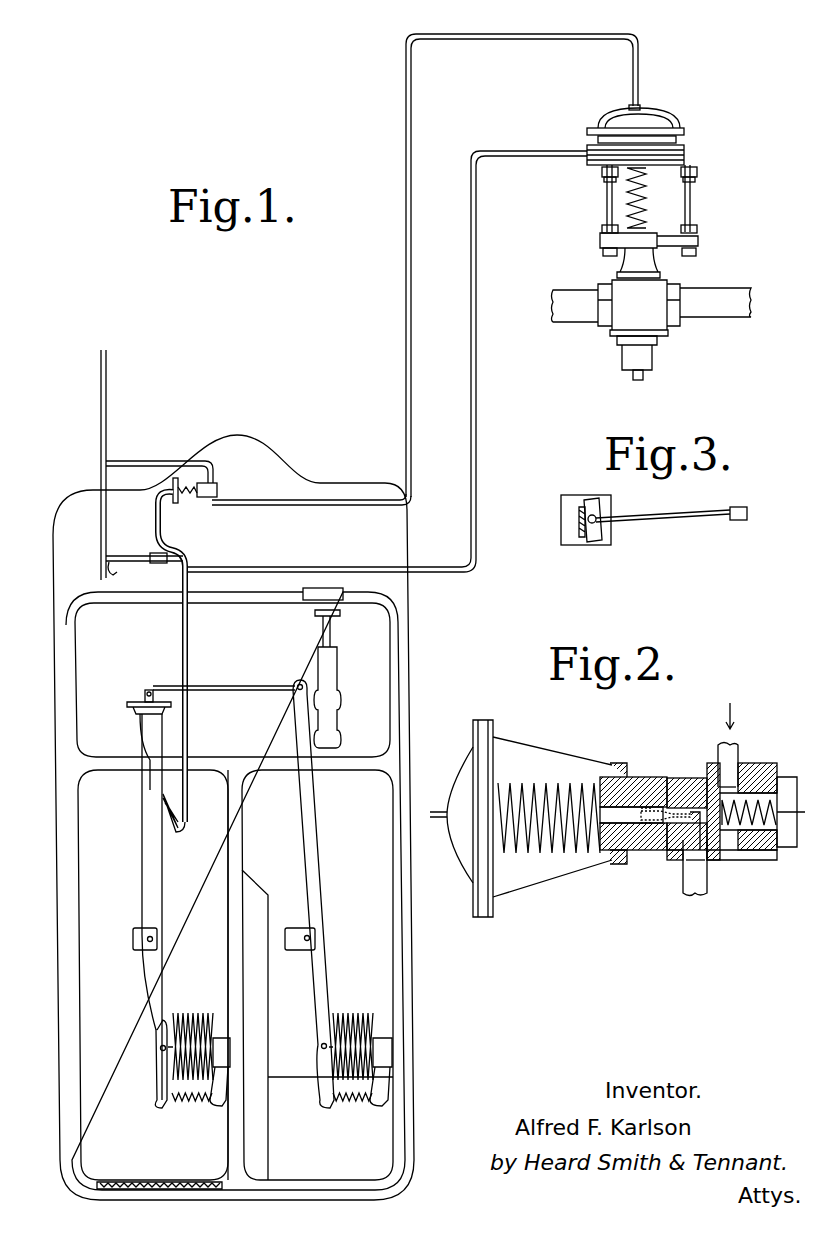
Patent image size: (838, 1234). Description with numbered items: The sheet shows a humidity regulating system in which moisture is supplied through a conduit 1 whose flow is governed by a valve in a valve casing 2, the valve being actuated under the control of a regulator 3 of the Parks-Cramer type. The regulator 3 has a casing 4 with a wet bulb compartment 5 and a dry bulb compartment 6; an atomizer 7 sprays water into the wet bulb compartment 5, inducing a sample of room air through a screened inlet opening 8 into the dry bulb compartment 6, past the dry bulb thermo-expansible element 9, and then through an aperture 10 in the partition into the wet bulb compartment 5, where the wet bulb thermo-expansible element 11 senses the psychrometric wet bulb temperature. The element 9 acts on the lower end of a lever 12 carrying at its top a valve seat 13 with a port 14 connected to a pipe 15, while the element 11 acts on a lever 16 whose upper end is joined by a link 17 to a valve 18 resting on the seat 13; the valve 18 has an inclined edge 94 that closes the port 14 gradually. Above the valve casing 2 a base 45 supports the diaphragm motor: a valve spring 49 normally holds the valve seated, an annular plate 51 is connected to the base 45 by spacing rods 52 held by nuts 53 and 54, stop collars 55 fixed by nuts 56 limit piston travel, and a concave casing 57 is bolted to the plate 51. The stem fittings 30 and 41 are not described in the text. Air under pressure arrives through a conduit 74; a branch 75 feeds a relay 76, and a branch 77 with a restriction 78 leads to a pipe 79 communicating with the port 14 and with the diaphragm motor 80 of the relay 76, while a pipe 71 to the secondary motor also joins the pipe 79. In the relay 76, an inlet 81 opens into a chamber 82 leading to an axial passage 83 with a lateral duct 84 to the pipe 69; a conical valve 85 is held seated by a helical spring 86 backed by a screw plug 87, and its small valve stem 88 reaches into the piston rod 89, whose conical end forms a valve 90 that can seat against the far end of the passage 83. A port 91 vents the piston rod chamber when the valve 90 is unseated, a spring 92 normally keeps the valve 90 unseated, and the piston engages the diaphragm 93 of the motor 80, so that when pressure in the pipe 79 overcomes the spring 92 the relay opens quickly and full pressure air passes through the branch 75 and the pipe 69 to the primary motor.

In FIG. 1, the conduit 1 is at (739, 290).
In FIG. 1, the valve casing 2 is at (652, 292).
In FIG. 1, the regulator 3 is at (380, 670).
In FIG. 1, the casing 4 is at (398, 748).
In FIG. 1, the wet bulb compartment 5 is at (393, 915).
In FIG. 1, the dry bulb compartment 6 is at (95, 987).
In FIG. 1, the atomizer 7 is at (336, 716).
In FIG. 1, the screened inlet opening 8 is at (130, 1183).
In FIG. 1, the dry bulb thermo-expansible element 9 is at (189, 1022).
In FIG. 1, the aperture 10 is at (230, 852).
In FIG. 1, the wet bulb thermo-expansible element 11 is at (349, 1020).
In FIG. 1, the lever 12 is at (164, 970).
In FIG. 1, the valve seat 13 is at (126, 703).
In FIG. 3, the valve seat 13 is at (611, 506).
In FIG. 1, the port 14 is at (140, 712).
In FIG. 3, the port 14 is at (580, 514).
In FIG. 1, the pipe 15 is at (188, 740).
In FIG. 1, the lever 16 is at (323, 965).
In FIG. 3, the lever 16 is at (748, 520).
In FIG. 1, the link 17 is at (229, 681).
In FIG. 3, the link 17 is at (676, 521).
In FIG. 1, the valve 18 is at (144, 690).
In FIG. 3, the valve 18 is at (594, 541).
In FIG. 1, the valve stem nut 30 is at (655, 366).
In FIG. 1, the valve stem end 41 is at (630, 375).
In FIG. 1, the base 45 is at (662, 233).
In FIG. 1, the valve spring 49 is at (636, 203).
In FIG. 1, the plate 51 is at (697, 133).
In FIG. 1, the spacing rods 52 is at (606, 203).
In FIG. 1, the nut 53 is at (698, 228).
In FIG. 1, the nut 54 is at (698, 250).
In FIG. 1, the stop collars 55 is at (698, 170).
In FIG. 1, the nuts 56 is at (697, 180).
In FIG. 1, the casing 57 is at (660, 114).
In FIG. 1, the pipe 69 is at (639, 86).
In FIG. 2, the pipe 69 is at (700, 893).
In FIG. 1, the pipe 71 is at (479, 411).
In FIG. 1, the conduit 74 is at (106, 412).
In FIG. 1, the branch 75 is at (143, 461).
In FIG. 2, the branch 75 is at (742, 757).
In FIG. 1, the relay 76 is at (218, 490).
In FIG. 2, the relay 76 is at (733, 851).
In FIG. 1, the branch 77 is at (125, 578).
In FIG. 1, the restriction 78 is at (153, 556).
In FIG. 1, the pipe 79 is at (187, 639).
In FIG. 1, the diaphragm motor 80 is at (170, 500).
In FIG. 2, the diaphragm motor 80 is at (468, 880).
In FIG. 2, the inlet 81 is at (736, 778).
In FIG. 2, the chamber 82 is at (745, 806).
In FIG. 2, the axial passage 83 is at (672, 870).
In FIG. 2, the duct 84 is at (688, 880).
In FIG. 2, the conical valve 85 is at (712, 775).
In FIG. 2, the helical spring 86 is at (760, 847).
In FIG. 2, the screw plug 87 is at (783, 812).
In FIG. 2, the valve stem 88 is at (680, 778).
In FIG. 2, the piston rod 89 is at (608, 828).
In FIG. 2, the valve 90 is at (660, 822).
In FIG. 2, the port 91 is at (667, 778).
In FIG. 2, the spring 92 is at (566, 860).
In FIG. 2, the diaphragm 93 is at (493, 900).
In FIG. 3, the inclined edge 94 is at (586, 503).